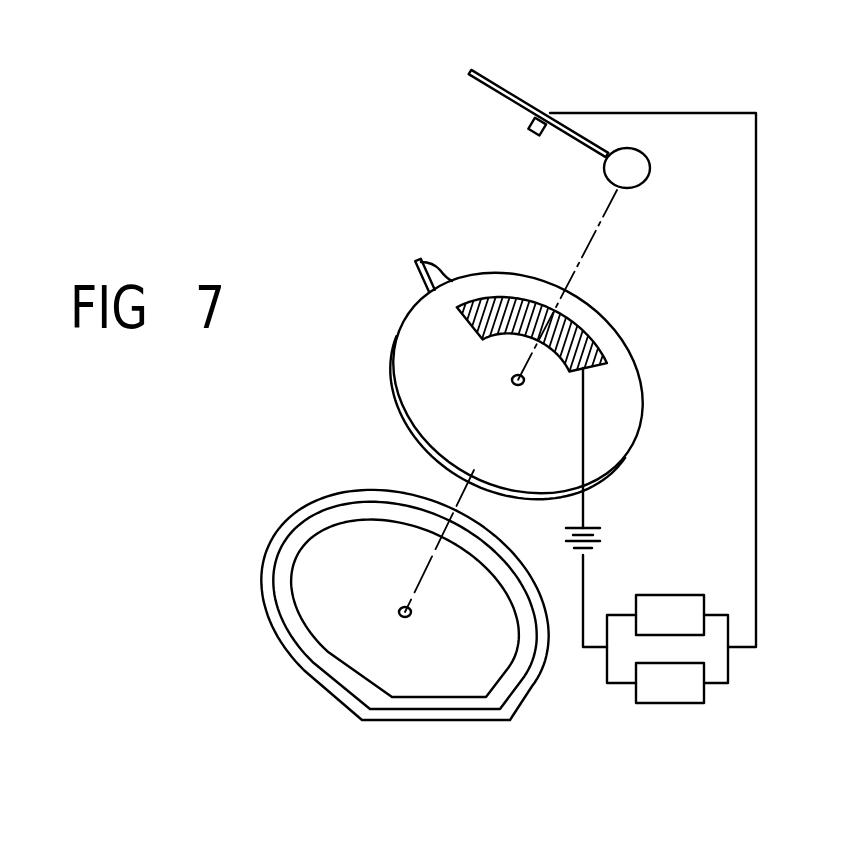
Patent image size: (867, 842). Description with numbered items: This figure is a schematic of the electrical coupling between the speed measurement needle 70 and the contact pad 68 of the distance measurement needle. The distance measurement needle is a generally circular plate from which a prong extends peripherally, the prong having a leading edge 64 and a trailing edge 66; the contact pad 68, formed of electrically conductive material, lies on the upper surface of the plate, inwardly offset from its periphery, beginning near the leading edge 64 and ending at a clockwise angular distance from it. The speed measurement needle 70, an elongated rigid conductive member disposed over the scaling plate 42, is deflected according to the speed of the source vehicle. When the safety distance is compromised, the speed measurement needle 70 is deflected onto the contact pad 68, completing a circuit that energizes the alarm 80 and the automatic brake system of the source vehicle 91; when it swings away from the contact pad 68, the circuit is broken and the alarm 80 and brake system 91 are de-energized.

The scaling plate 42 is at (328, 665).
The leading edge 64 is at (436, 276).
The trailing edge 66 is at (418, 268).
The contact pad 68 is at (573, 340).
The speed measurement needle 70 is at (532, 102).
The alarm 80 is at (687, 605).
The automatic brake system of a source vehicle 91 is at (690, 692).